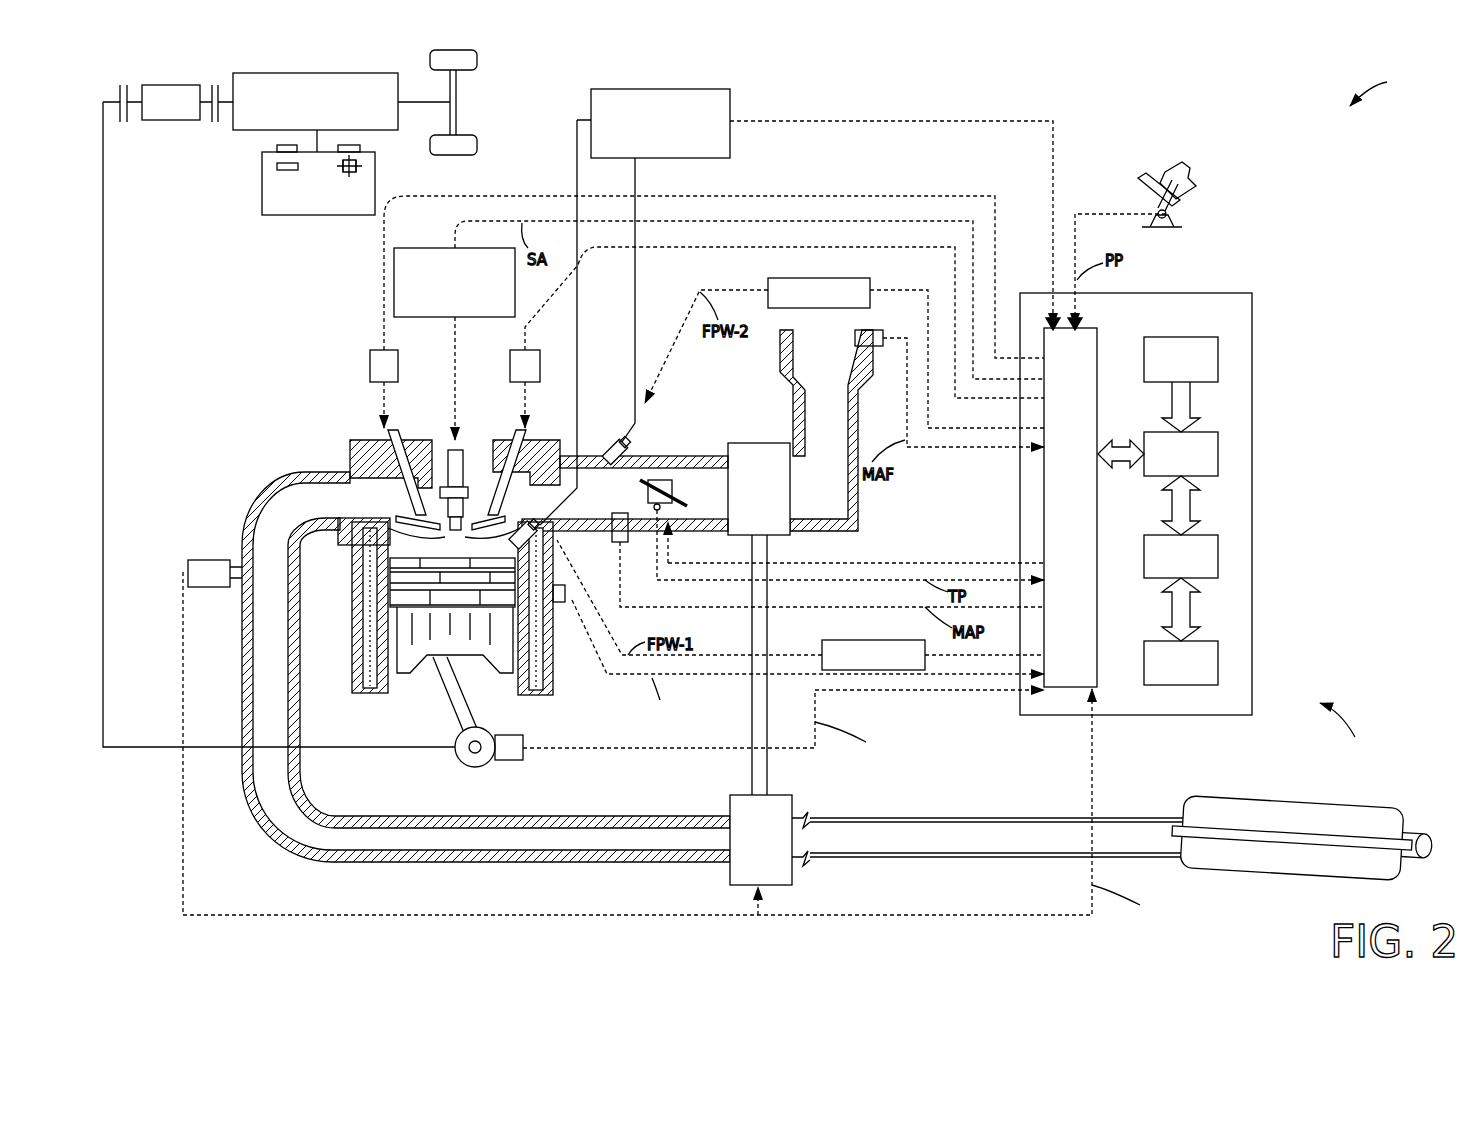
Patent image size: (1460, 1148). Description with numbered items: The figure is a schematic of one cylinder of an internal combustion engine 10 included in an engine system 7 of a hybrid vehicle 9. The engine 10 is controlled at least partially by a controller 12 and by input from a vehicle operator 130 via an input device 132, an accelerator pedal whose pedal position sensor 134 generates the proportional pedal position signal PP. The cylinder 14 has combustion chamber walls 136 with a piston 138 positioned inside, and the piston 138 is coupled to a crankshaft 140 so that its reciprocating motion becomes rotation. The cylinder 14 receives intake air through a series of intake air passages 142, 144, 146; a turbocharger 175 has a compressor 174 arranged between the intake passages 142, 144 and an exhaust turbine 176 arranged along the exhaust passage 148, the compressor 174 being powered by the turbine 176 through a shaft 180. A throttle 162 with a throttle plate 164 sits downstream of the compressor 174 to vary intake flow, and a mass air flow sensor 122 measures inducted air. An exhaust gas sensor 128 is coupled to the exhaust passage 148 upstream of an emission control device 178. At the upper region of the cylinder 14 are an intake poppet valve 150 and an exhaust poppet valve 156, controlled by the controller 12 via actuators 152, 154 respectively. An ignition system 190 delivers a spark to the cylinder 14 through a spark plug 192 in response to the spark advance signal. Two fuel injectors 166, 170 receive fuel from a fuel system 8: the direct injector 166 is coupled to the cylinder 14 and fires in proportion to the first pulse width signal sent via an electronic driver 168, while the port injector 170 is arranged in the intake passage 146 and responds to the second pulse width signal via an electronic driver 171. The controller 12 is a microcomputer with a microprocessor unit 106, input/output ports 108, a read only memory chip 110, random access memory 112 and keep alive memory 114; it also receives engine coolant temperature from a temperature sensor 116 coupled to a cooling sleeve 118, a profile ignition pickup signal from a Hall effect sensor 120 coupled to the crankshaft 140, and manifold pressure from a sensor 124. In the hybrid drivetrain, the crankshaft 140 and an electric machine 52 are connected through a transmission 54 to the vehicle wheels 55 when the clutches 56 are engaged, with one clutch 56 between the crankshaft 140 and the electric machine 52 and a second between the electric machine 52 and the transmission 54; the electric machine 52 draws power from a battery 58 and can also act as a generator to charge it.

The engine system 7 is at (1349, 727).
The fuel system 8 is at (700, 89).
The vehicle 9 is at (1375, 88).
The internal combustion engine 10 is at (287, 393).
The controller 12 is at (1175, 492).
The cylinder 14 is at (355, 578).
The electric machine 52 is at (168, 120).
The transmission 54 is at (380, 130).
The vehicle wheels 55 is at (455, 155).
The clutch 56 is at (120, 90).
The battery 58 is at (315, 215).
The microprocessor unit 106 is at (1218, 442).
The input/output ports 108 is at (1097, 338).
The read only memory chip 110 is at (1218, 345).
The random access memory 112 is at (1218, 548).
The keep alive memory 114 is at (1218, 652).
The temperature sensor 116 is at (560, 610).
The cooling sleeve 118 is at (553, 605).
The Hall effect sensor 120 is at (510, 760).
The mass air flow sensor 122 is at (876, 330).
The manifold pressure sensor 124 is at (622, 542).
The exhaust gas sensor 128 is at (188, 562).
The vehicle operator 130 is at (1193, 178).
The input device 132 is at (1140, 188).
The pedal position sensor 134 is at (1172, 214).
The combustion chamber walls 136 is at (390, 688).
The piston 138 is at (438, 645).
The crankshaft 140 is at (467, 767).
The intake air passage 142 is at (845, 365).
The intake air passage 144 is at (722, 503).
The intake air passage 146 is at (634, 503).
The exhaust passage 148 is at (338, 513).
The intake poppet valve 150 is at (466, 520).
The actuator 152 is at (510, 365).
The actuator 154 is at (370, 365).
The exhaust poppet valve 156 is at (353, 473).
The throttle 162 is at (667, 480).
The throttle plate 164 is at (640, 478).
The fuel injector 166 is at (513, 523).
The electronic driver 168 is at (822, 641).
The fuel injector 170 is at (612, 442).
The electronic driver 171 is at (770, 279).
The compressor 174 is at (775, 502).
The turbocharger 175 is at (760, 915).
The exhaust turbine 176 is at (775, 848).
The emission control device 178 is at (1360, 805).
The shaft 180 is at (767, 757).
The ignition system 190 is at (442, 248).
The spark plug 192 is at (448, 473).